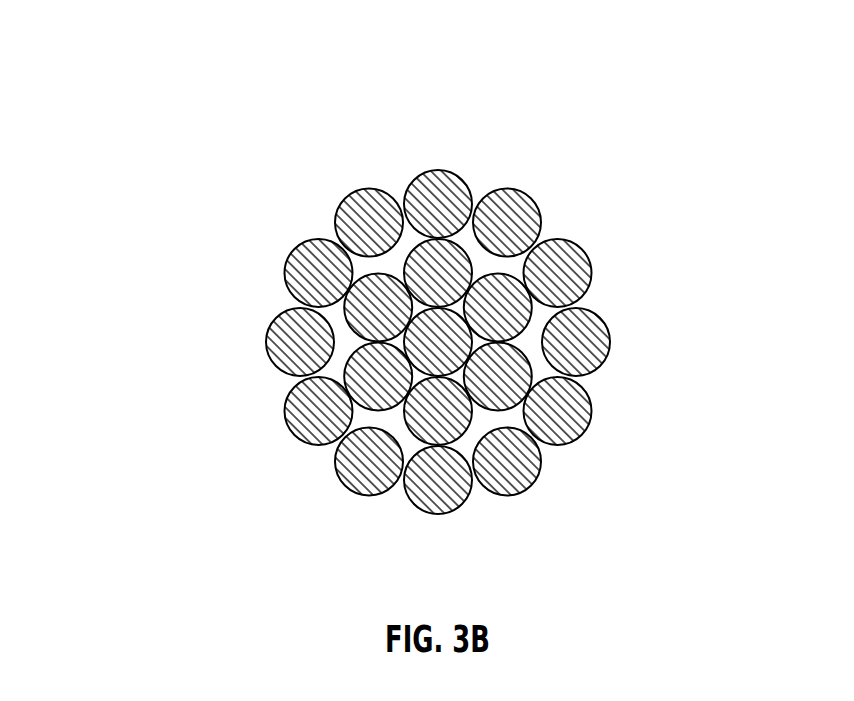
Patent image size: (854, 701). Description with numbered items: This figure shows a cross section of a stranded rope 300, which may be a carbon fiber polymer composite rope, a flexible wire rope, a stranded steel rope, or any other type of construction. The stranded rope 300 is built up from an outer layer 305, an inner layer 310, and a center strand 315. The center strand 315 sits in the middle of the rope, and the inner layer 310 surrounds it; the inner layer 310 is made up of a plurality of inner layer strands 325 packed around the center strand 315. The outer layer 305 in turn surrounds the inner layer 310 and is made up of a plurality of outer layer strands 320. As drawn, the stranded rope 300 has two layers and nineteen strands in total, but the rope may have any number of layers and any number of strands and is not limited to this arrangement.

The stranded rope 300 is at (188, 77).
The outer layer 305 is at (262, 250).
The inner layer 310 is at (445, 430).
The center strand 315 is at (440, 335).
The outer layer strands 320 is at (367, 493).
The inner layer strands 325 is at (440, 257).